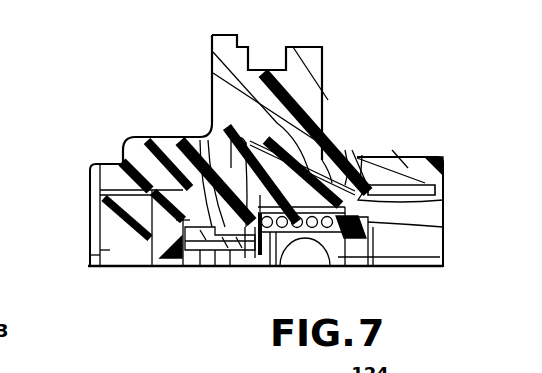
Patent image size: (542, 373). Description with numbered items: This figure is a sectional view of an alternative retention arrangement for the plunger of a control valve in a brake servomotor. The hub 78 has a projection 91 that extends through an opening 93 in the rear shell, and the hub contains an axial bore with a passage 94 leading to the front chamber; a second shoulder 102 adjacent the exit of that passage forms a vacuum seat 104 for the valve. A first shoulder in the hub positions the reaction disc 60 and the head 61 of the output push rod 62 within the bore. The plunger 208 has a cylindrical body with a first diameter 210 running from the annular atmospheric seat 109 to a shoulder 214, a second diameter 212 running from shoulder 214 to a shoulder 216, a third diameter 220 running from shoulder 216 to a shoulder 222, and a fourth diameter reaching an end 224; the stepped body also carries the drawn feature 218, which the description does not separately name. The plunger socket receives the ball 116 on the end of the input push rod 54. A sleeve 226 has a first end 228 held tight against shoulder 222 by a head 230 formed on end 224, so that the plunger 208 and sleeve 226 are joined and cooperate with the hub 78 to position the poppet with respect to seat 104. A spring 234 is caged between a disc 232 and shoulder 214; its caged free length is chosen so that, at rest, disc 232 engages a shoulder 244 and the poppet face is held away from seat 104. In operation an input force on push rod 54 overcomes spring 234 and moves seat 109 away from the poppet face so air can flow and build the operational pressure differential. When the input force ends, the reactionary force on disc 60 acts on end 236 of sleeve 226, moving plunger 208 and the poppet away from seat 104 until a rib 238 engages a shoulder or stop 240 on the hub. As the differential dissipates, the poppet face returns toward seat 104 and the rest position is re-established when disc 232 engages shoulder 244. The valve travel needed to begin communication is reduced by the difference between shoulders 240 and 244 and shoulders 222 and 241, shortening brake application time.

The push rod 54 is at (432, 268).
The reaction disc 60 is at (157, 268).
The head 61 is at (110, 268).
The push rod 62 is at (88, 255).
The hub 78 is at (220, 46).
The projection 91 is at (418, 156).
The opening 93 is at (446, 157).
The passage 94 is at (212, 88).
The second shoulder 102 is at (390, 165).
The vacuum seat 104 is at (443, 196).
The atmospheric seat 109 is at (443, 229).
The ball 116 is at (305, 252).
The plunger 208 is at (247, 268).
The first diameter 210 is at (372, 150).
The second diameter 212 is at (332, 118).
The shoulder 214 is at (357, 160).
The shoulder 216 is at (283, 262).
The bead row 218 is at (268, 270).
The third diameter 220 is at (205, 270).
The shoulder 222 is at (230, 275).
The end 224 is at (180, 275).
The sleeve 226 is at (196, 150).
The first end 228 is at (233, 137).
The head 230 is at (150, 226).
The disc 232 is at (283, 165).
The spring 234 is at (340, 262).
The end 236 is at (125, 203).
The rib 238 is at (150, 139).
The shoulder or stop 240 is at (160, 140).
The shoulder 241 is at (200, 268).
The shoulder 244 is at (260, 205).